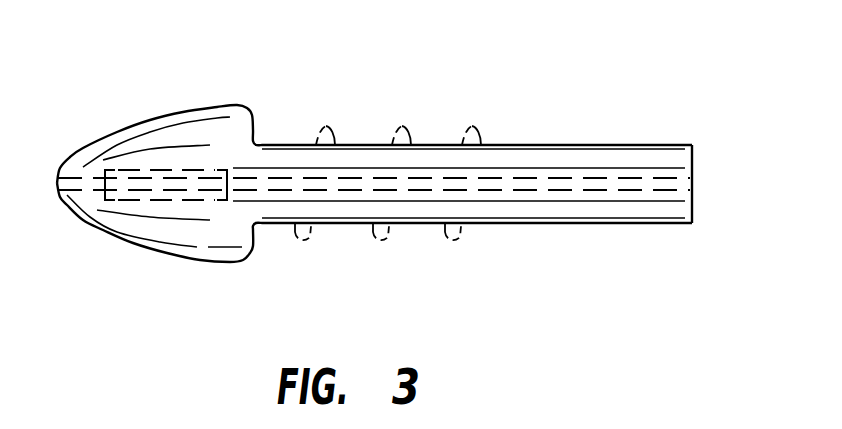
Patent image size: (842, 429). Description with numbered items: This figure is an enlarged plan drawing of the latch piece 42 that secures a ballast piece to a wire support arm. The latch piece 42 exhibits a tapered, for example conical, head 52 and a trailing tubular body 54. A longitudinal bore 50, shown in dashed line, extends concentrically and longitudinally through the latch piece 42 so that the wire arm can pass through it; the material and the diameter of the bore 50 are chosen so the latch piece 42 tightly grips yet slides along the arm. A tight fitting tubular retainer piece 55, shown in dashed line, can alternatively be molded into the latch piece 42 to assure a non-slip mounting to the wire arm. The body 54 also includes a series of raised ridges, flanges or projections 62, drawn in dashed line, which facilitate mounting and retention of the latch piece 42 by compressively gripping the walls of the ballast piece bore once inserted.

The latch piece 42 is at (103, 230).
The longitudinal bore 50 is at (695, 180).
The tapered head 52 is at (115, 133).
The tubular body 54 is at (562, 144).
The tubular retainer piece 55 is at (176, 170).
The ridges 62 is at (460, 131).